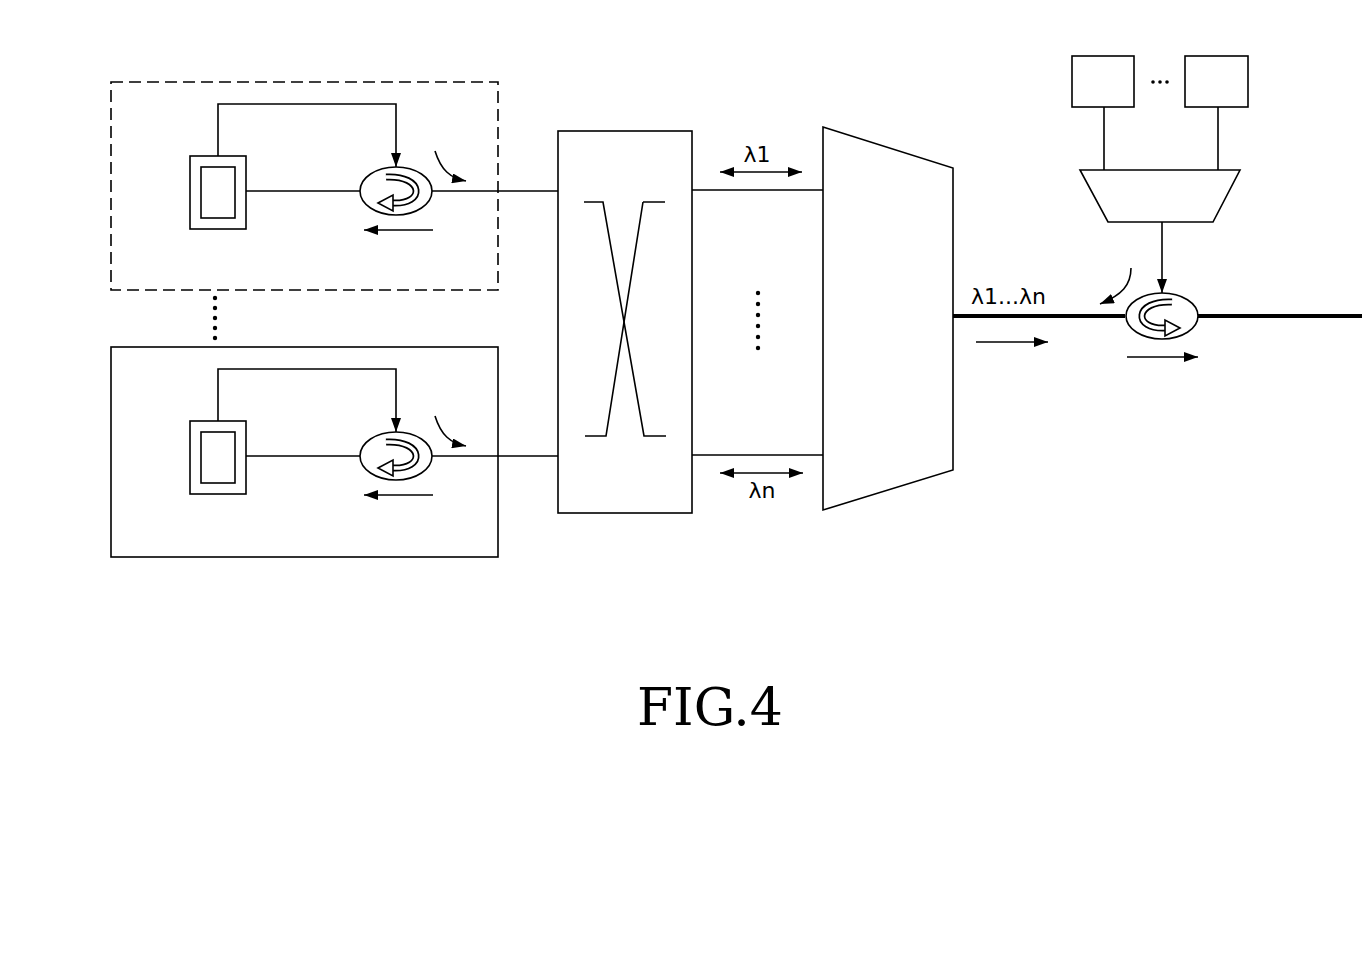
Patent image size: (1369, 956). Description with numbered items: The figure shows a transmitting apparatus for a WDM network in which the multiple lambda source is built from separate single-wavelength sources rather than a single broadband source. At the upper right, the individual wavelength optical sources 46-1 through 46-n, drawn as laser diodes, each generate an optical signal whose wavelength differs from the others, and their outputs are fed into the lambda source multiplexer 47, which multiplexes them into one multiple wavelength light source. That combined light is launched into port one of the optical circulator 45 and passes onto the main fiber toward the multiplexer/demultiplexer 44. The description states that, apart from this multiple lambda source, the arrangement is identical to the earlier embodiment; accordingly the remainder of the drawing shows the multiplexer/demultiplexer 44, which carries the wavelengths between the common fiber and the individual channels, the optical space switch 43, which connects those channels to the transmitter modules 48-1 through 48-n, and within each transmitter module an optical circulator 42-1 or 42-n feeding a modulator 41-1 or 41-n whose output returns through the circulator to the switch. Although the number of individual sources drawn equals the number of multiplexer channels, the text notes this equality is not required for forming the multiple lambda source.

The modulator 41-1 is at (218, 230).
The modulator 41-n is at (218, 478).
The optical circulator 42-1 is at (364, 177).
The optical circulator 42-n is at (373, 443).
The optical space switch 43 is at (557, 325).
The multiplexer/demultiplexer 44 is at (882, 143).
The optical circulator 45 is at (1192, 303).
The individual wavelength optical source 46-1 is at (1072, 87).
The individual wavelength optical source 46-n is at (1248, 87).
The lambda source multiplexer 47 is at (1095, 201).
The transmitter module 48-1 is at (110, 190).
The transmitter module 48-n is at (296, 452).